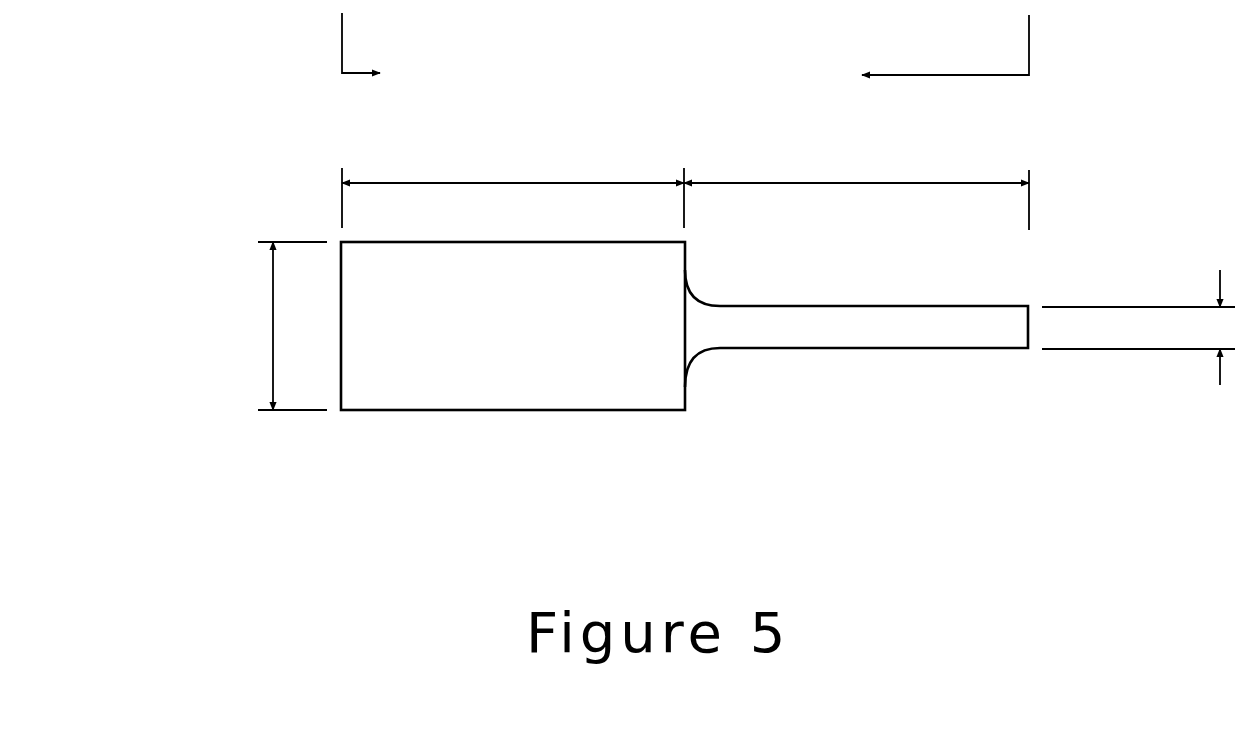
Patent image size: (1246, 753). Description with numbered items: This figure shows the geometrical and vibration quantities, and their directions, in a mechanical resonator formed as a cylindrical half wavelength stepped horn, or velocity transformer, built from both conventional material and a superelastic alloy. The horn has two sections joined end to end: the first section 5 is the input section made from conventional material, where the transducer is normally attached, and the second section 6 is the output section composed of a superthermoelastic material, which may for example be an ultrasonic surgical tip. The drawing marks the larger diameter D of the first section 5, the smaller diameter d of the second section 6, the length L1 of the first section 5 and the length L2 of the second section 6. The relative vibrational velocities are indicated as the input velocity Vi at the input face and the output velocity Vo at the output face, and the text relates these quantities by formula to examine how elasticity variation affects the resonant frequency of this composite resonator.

The first section of half wavelength stepped velocity transformer 5 is at (530, 347).
The second section of half wavelength stepped velocity transformer 6 is at (849, 345).
The diameter of body D is at (273, 326).
The diameter of rod d is at (1138, 300).
The length of body L1 is at (513, 177).
The length of rod L2 is at (856, 178).
The input velocity Vi is at (383, 50).
The output velocity Vo is at (919, 51).